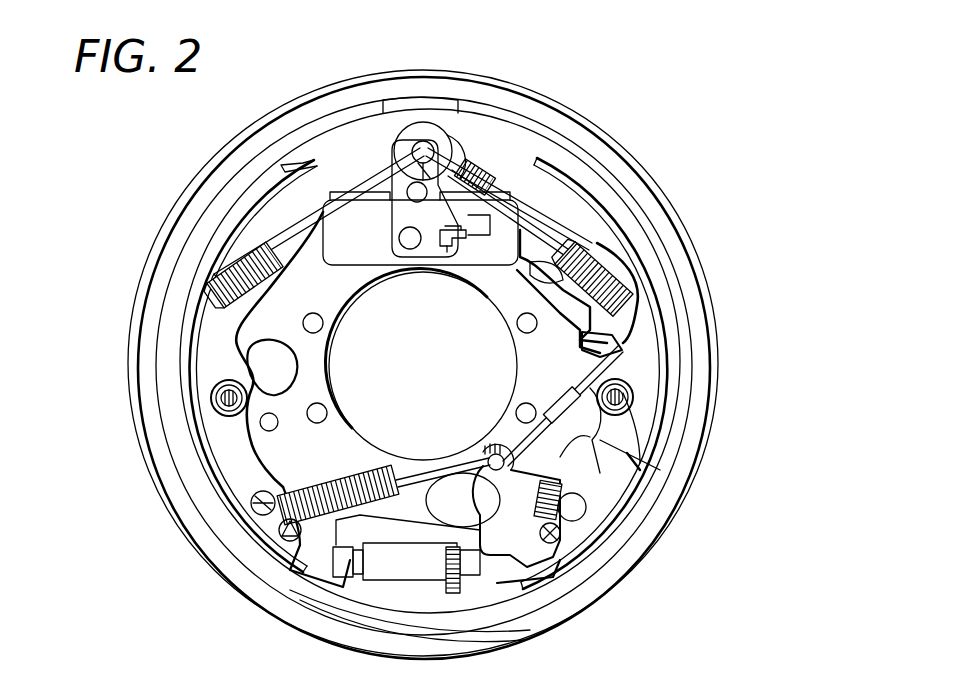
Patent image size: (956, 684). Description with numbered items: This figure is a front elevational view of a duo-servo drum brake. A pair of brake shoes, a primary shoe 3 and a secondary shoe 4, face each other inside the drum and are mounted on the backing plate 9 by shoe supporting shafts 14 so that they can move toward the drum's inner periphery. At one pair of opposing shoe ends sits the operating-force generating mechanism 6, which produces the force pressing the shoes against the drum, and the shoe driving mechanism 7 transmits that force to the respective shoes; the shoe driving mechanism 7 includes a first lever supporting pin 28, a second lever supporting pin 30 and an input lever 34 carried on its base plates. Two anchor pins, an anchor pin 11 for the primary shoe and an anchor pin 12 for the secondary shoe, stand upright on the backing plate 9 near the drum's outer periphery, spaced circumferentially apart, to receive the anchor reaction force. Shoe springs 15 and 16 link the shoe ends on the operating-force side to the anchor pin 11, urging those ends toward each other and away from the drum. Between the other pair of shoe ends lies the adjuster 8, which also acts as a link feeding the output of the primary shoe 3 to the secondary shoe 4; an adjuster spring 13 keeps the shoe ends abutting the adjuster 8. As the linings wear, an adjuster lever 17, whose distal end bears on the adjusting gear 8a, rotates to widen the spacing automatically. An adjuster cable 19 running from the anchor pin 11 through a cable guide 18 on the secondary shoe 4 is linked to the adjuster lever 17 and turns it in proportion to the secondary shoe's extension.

The primary shoe 3 is at (265, 205).
The secondary shoe 4 is at (565, 205).
The operating-force generating mechanism 6 is at (485, 252).
The shoe driving mechanism 7 is at (362, 252).
The adjuster 8 is at (377, 570).
The adjusting gear 8a is at (518, 640).
The backing plate 9 is at (218, 175).
The anchor pin 11 is at (432, 150).
The anchor pin 12 is at (455, 160).
The adjuster spring 13 is at (350, 458).
The shoe supporting shafts 14 is at (221, 401).
The shoe spring 15 is at (285, 240).
The shoe spring 16 is at (590, 240).
The adjuster lever 17 is at (517, 510).
The cable guide 18 is at (596, 332).
The adjuster cable 19 is at (613, 440).
The first lever supporting pin 28 is at (407, 250).
The second lever supporting pin 30 is at (385, 183).
The input lever 34 is at (444, 252).